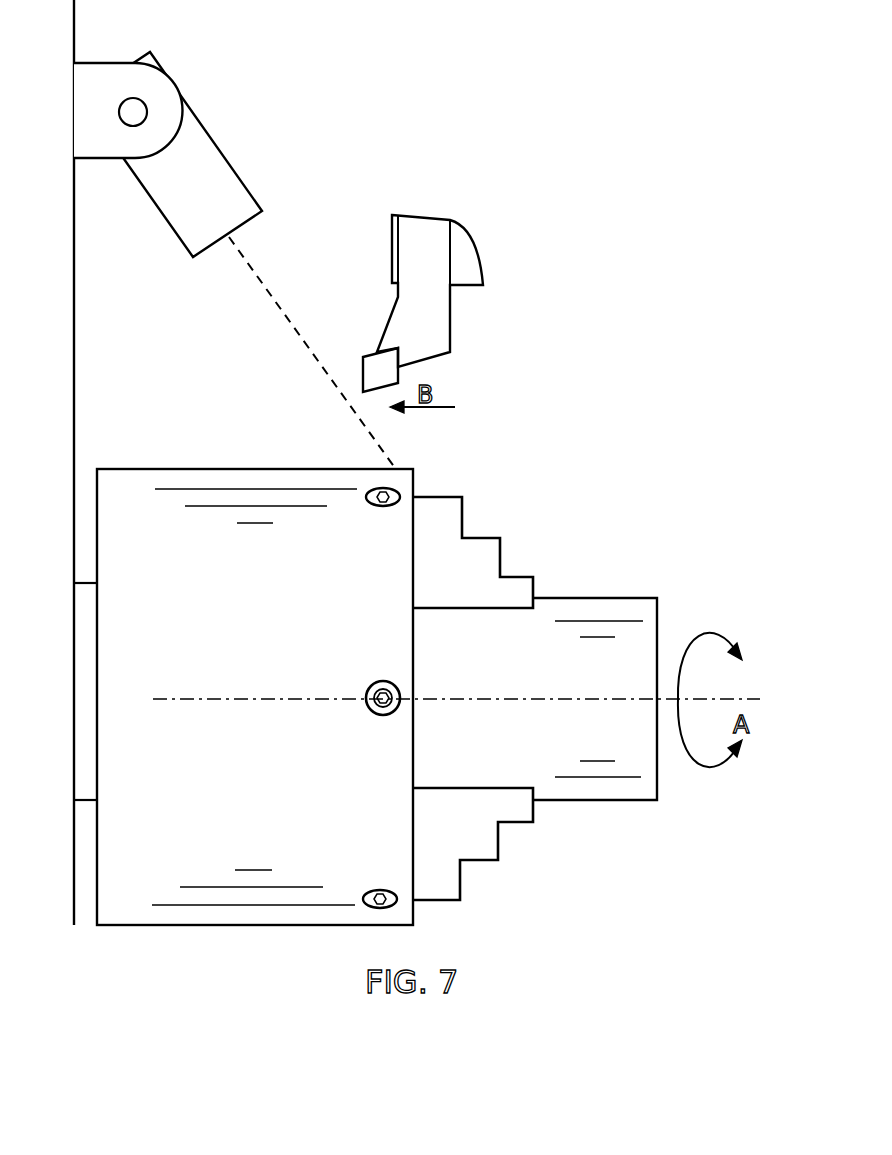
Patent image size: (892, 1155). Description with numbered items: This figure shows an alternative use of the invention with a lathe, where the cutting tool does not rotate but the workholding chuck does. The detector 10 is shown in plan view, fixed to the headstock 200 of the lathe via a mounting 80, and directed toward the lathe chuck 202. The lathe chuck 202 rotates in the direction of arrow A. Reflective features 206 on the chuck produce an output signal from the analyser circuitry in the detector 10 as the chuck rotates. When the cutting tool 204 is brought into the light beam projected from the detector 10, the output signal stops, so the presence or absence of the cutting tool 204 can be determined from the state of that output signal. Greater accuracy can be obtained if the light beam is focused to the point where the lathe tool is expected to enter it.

The detector 10 is at (208, 160).
The mounting 80 is at (96, 62).
The headstock 200 is at (75, 357).
The lathe chuck 202 is at (315, 697).
The cutting tool 204 is at (428, 307).
The reflective features 206 is at (382, 508).